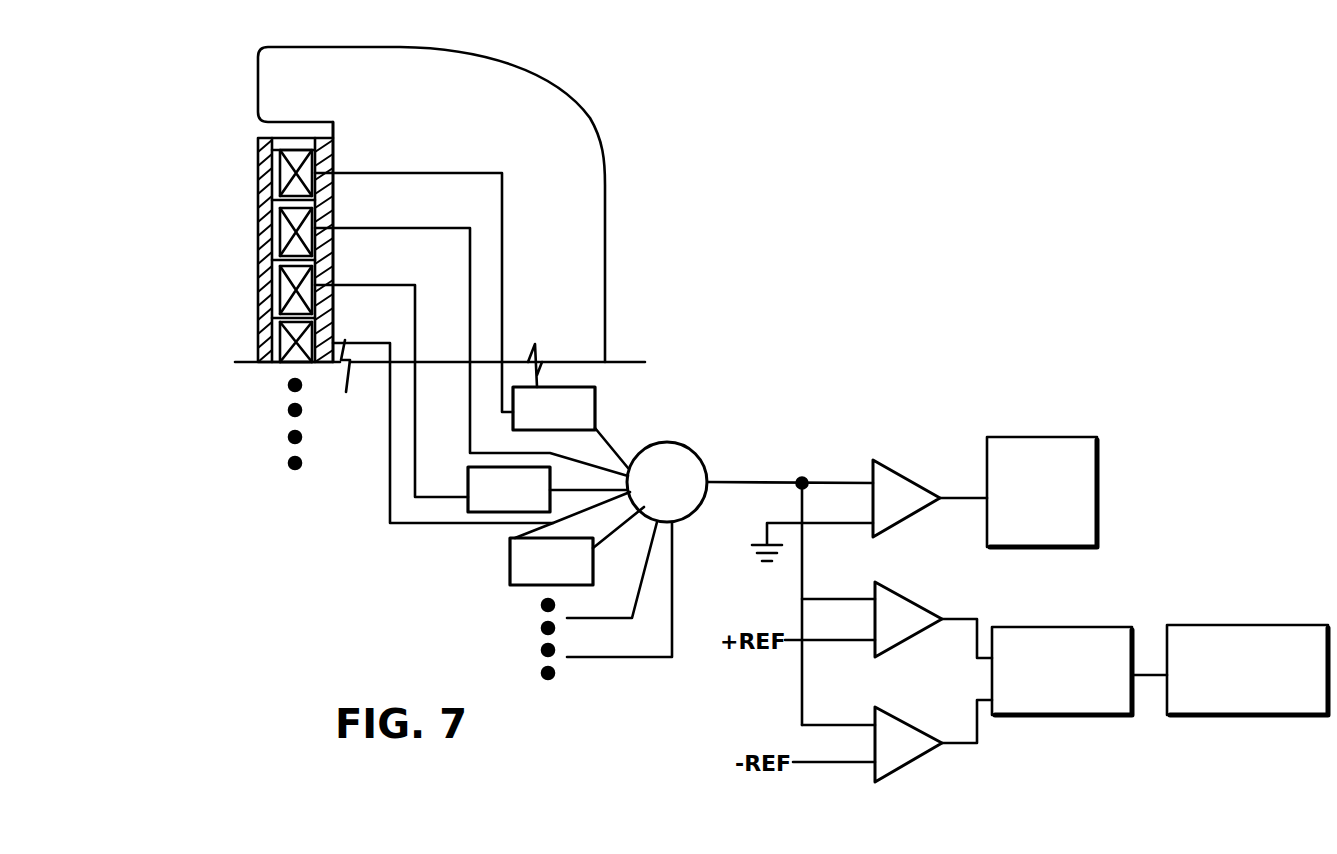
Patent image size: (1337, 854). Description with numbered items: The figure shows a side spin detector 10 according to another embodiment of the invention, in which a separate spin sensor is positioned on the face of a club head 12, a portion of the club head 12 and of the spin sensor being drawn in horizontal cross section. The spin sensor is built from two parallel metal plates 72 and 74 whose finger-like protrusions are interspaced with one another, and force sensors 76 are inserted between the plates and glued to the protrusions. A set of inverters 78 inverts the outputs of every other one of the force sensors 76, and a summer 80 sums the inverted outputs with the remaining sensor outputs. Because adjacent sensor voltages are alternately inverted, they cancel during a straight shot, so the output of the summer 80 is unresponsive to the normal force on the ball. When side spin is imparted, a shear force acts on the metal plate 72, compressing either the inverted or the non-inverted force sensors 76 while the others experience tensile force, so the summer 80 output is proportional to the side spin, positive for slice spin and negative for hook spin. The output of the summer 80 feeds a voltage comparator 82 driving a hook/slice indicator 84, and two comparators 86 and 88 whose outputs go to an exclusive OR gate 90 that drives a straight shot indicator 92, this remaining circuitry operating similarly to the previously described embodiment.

The golf club sensor assembly 10 is at (193, 178).
The club head 12 is at (555, 93).
The metal plate 72 is at (265, 253).
The metal plate 74 is at (335, 152).
The force sensors 76 is at (282, 206).
The inverters 78 is at (593, 540).
The summer 80 is at (688, 446).
The voltage comparator 82 is at (903, 470).
The hook/slice indicator 84 is at (1032, 436).
The comparator 86 is at (910, 596).
The comparator 88 is at (910, 718).
The exclusive OR gate 90 is at (1088, 624).
The straight shot indicator 92 is at (1236, 624).